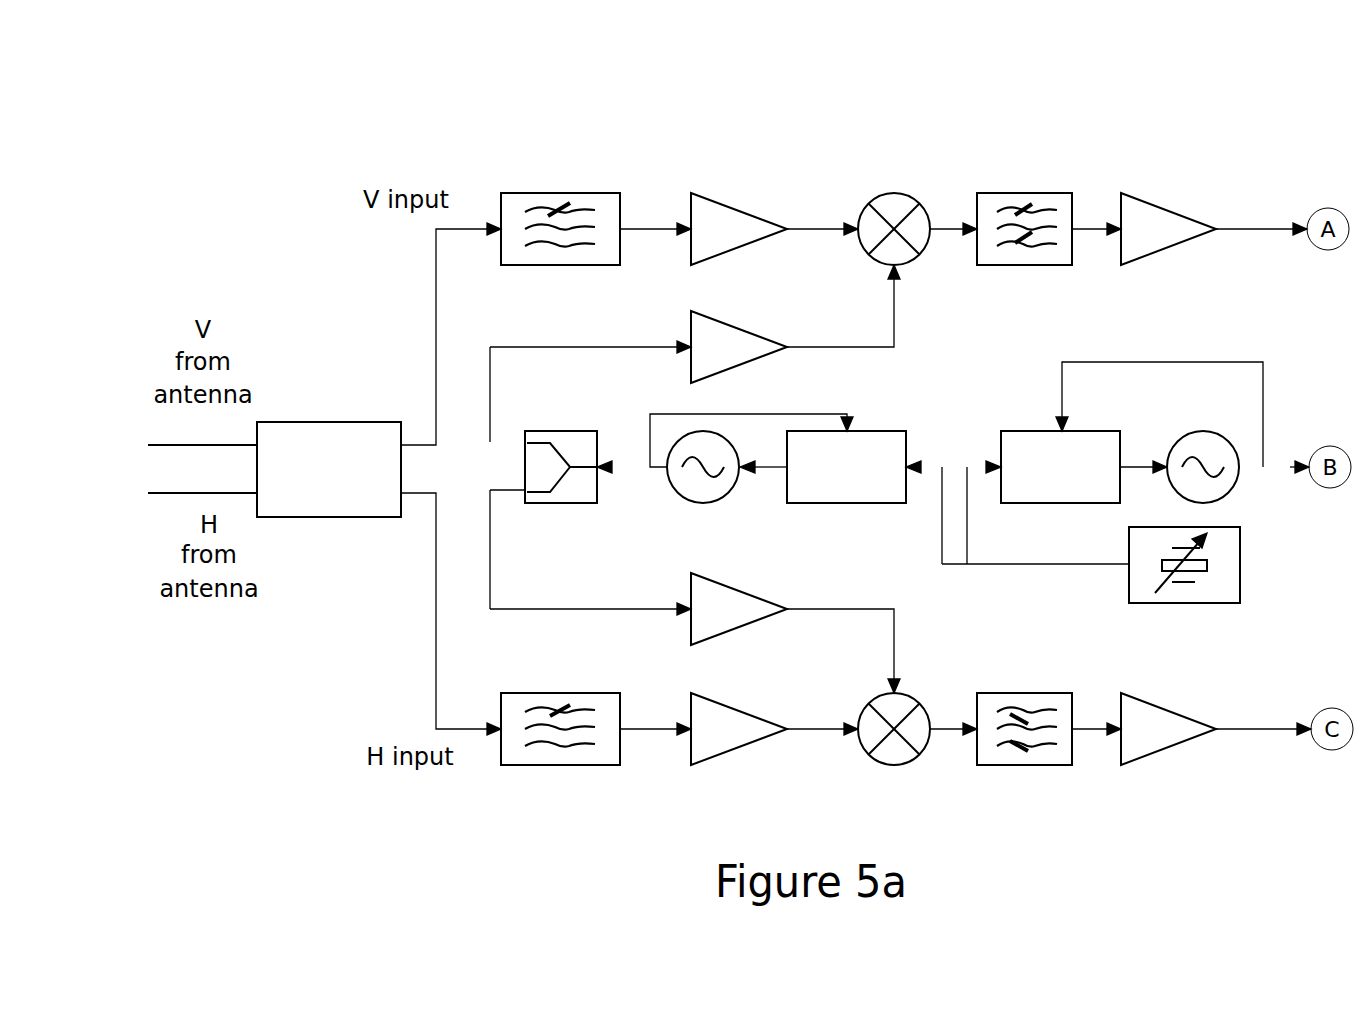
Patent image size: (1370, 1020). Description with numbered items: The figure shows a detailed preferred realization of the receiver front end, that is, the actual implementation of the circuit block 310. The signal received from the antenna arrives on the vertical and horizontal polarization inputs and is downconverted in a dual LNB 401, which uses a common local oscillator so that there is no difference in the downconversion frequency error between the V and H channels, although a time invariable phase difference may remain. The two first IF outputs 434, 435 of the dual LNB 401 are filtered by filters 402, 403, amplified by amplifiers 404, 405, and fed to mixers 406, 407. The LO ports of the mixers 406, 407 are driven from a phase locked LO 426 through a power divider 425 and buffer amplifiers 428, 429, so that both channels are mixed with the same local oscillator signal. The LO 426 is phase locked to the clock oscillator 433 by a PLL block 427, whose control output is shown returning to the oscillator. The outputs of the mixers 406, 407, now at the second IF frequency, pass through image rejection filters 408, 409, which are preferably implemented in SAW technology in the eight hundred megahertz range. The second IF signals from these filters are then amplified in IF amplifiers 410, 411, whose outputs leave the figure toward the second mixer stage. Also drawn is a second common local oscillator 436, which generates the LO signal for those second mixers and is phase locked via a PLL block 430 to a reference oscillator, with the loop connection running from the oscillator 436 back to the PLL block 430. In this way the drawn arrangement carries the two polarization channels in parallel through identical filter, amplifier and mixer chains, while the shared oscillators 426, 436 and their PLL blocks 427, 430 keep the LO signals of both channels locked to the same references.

The circuit block 310 is at (808, 113).
The dual LNB 401 is at (274, 451).
The filter 402 is at (596, 203).
The filter 403 is at (596, 754).
The amplifier 404 is at (774, 206).
The amplifier 405 is at (774, 751).
The mixer 406 is at (917, 206).
The mixer 407 is at (917, 755).
The image rejection filter 408 is at (1049, 203).
The image rejection filter 409 is at (1049, 752).
The IF amplifier 410 is at (1214, 203).
The IF amplifier 411 is at (1216, 755).
The power divider 425 is at (551, 478).
The phase locked LO 426 is at (751, 481).
The PLL block 427 is at (854, 490).
The buffer amplifier 428 is at (695, 324).
The buffer amplifier 429 is at (695, 633).
The PLL block 430 is at (1102, 463).
The clock oscillator 433 is at (1091, 589).
The first IF output 434 is at (451, 334).
The first IF output 435 is at (451, 614).
The local oscillator 436 is at (1238, 440).